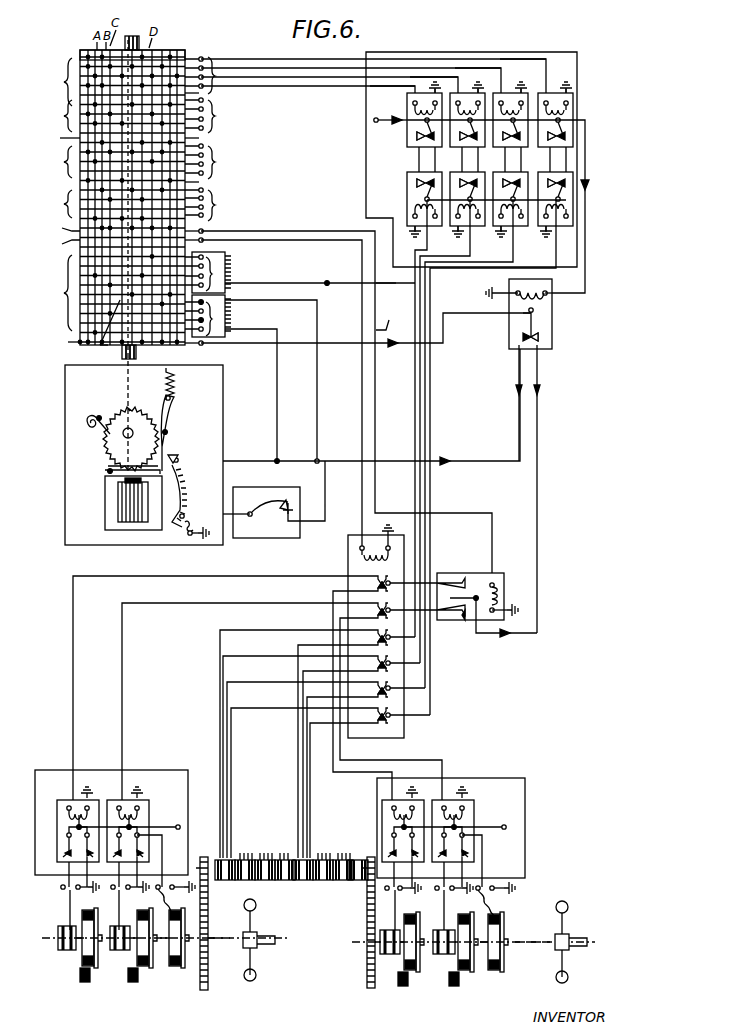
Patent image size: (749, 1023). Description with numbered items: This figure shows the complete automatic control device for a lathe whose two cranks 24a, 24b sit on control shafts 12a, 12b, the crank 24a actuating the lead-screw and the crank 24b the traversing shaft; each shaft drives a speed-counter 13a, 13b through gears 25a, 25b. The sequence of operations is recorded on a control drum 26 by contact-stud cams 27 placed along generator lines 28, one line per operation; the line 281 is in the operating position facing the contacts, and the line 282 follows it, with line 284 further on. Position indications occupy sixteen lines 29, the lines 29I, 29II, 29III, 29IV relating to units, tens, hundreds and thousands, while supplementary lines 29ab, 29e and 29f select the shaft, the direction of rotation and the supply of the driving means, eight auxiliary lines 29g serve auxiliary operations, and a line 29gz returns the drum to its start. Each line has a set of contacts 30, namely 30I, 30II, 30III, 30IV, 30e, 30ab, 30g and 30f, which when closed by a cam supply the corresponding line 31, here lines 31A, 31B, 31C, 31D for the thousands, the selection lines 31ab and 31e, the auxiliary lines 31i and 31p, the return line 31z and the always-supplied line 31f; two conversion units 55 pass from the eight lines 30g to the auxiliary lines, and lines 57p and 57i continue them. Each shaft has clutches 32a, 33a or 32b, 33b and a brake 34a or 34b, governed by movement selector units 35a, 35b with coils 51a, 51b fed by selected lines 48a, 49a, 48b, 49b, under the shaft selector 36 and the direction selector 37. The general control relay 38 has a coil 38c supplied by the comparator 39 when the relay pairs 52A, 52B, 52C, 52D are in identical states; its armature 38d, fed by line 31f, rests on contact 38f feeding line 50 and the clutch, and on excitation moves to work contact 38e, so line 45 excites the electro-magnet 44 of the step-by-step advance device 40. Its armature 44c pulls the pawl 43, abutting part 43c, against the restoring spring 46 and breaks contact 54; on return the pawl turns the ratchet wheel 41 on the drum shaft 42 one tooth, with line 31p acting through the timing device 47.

The control shaft 12a is at (250, 928).
The control shaft 12b is at (532, 933).
The speed-counter 13a is at (285, 842).
The speed-counter 13b is at (344, 842).
The crank 24a is at (262, 920).
The crank 24b is at (574, 922).
The gears 25a is at (209, 880).
The gears 25b is at (366, 890).
The control drum 26 is at (172, 48).
The contact-stud cams 27 is at (139, 30).
The generator lines 28 is at (60, 138).
The generator line 281 is at (197, 183).
The generator line 282 is at (197, 94).
The generator line 284 is at (197, 139).
The lines 29 is at (168, 48).
The line 29I is at (56, 204).
The line 29II is at (56, 162).
The line 29III is at (56, 116).
The line 29IV is at (56, 82).
The line 29e is at (60, 229).
The line 29ab is at (60, 249).
The auxiliary lines 29g is at (56, 293).
The line 29f is at (60, 342).
The line 29gz is at (88, 354).
The sets of contacts 30 is at (203, 56).
The set of contacts 30I is at (211, 204).
The set of contacts 30II is at (212, 161).
The set of contacts 30III is at (214, 115).
The set of contacts 30IV is at (223, 75).
The set of contacts 30e is at (206, 226).
The set of contacts 30ab is at (209, 242).
The sets of contacts 30g is at (207, 295).
The set of contacts 30f is at (198, 348).
The lines 31 is at (240, 56).
The line 31A is at (322, 47).
The line 31B is at (345, 66).
The line 31C is at (298, 78).
The line 31D is at (330, 87).
The line 31e is at (290, 229).
The line 31ab is at (315, 242).
The line 31p is at (290, 282).
The line 31z is at (300, 297).
The line 31i is at (252, 330).
The line 31f is at (445, 348).
The electro-magnetic clutch 32a is at (72, 952).
The electro-magnetic clutch 32b is at (395, 958).
The electro-magnetic clutch 33a is at (145, 968).
The electro-magnetic clutch 33b is at (466, 972).
The electro-magnetic brake 34a is at (183, 970).
The electro-magnetic brake 34b is at (498, 972).
The movement selector unit 35a is at (160, 772).
The movement selector unit 35b is at (488, 780).
The shaft selector 36 is at (396, 728).
The selector of direction of rotation 37 is at (497, 577).
The general control relay 38 is at (555, 330).
The coil 38c is at (552, 300).
The moving armature 38d is at (523, 320).
The working contact 38e is at (519, 336).
The rest contact 38f is at (540, 346).
The comparator 39 is at (365, 134).
The step-by-step advance device 40 is at (65, 370).
The ratchet wheel 41 is at (108, 434).
The shaft 42 is at (136, 352).
The pawl 43 is at (178, 408).
The part 43c is at (168, 432).
The electro-magnet 44 is at (118, 504).
The armature 44c is at (110, 475).
The line 45 is at (298, 455).
The restoring spring 46 is at (174, 380).
The timing device 47 is at (268, 528).
The line 48a is at (73, 685).
The line 48b is at (354, 772).
The line 49a is at (122, 685).
The line 49b is at (437, 760).
The line 50 is at (540, 428).
The coil 51a is at (55, 808).
The coil 51b is at (382, 812).
The pair of relays 52A is at (556, 152).
The pair of relays 52B is at (523, 152).
The pair of relays 52C is at (494, 152).
The pair of relays 52D is at (455, 152).
The contact 54 is at (182, 458).
The conversion units 55 is at (240, 305).
The conductor 57p is at (393, 291).
The conductor 57i is at (391, 318).